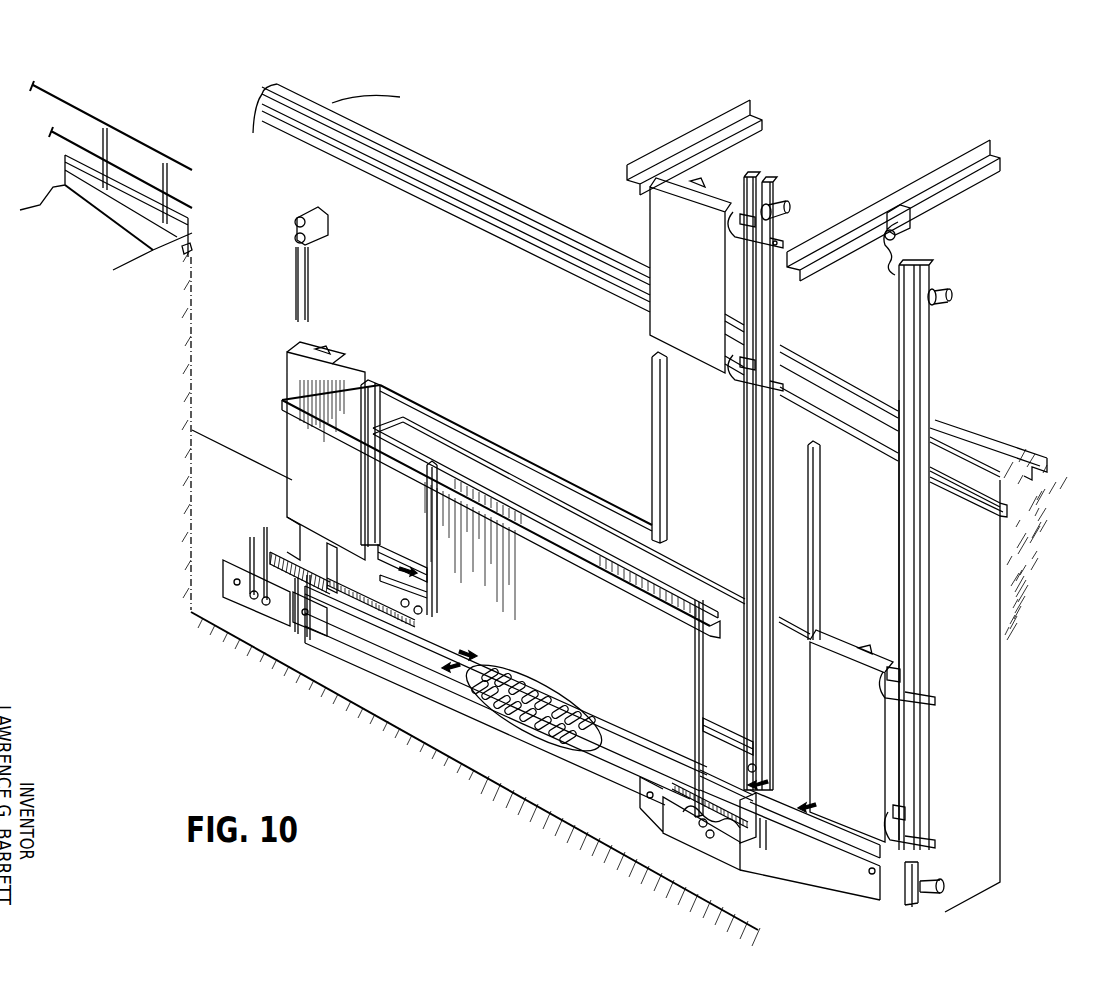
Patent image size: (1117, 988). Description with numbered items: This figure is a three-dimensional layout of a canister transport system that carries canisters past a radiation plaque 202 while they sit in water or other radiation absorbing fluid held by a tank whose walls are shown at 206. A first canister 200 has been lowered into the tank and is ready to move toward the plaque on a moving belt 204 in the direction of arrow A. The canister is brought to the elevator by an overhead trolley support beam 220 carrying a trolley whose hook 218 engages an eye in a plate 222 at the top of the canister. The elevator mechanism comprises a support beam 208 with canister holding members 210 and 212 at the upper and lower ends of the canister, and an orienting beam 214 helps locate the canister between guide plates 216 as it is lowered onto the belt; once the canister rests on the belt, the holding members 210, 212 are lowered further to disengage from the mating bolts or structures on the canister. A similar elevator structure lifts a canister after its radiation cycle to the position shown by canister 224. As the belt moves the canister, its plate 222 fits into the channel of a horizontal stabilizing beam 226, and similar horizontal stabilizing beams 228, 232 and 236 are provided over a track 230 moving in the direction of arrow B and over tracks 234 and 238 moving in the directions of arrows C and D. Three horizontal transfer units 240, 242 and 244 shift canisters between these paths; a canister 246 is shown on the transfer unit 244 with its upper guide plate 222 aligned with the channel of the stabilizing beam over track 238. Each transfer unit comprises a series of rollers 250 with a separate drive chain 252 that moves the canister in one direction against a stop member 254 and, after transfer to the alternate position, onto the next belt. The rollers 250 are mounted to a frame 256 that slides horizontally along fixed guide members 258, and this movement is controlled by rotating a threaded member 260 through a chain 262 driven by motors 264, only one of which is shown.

The first canister 200 is at (823, 707).
The radiation plaque 202 is at (600, 647).
The moving belt 204 is at (793, 800).
The tank walls 206 is at (190, 291).
The support beam 208 is at (918, 555).
The canister holding member 210 is at (784, 240).
The canister holding member 212 is at (773, 383).
The orienting beam 214 is at (667, 437).
The guide plates 216 is at (836, 834).
The hook 218 is at (898, 262).
The overhead trolley support beam 220 is at (730, 118).
The plate 222 is at (340, 366).
The canister 224 is at (663, 218).
The horizontal stabilizing beam 226 is at (473, 453).
The horizontal stabilizing beam 228 is at (490, 498).
The track 230 is at (463, 641).
The horizontal stabilizing beam 232 is at (382, 462).
The track 234 is at (420, 648).
The horizontal stabilizing beam 236 is at (397, 560).
The track 238 is at (440, 411).
The horizontal transfer unit 240 is at (380, 645).
The horizontal transfer unit 242 is at (682, 863).
The horizontal transfer unit 244 is at (284, 506).
The canister 246 is at (293, 438).
The rollers 250 is at (421, 588).
The drive chain 252 is at (367, 603).
The stop member 254 is at (327, 543).
The frame 256 is at (287, 530).
The fixed guide members 258 is at (272, 558).
The threaded member 260 is at (415, 609).
The chain 262 is at (250, 543).
The motor 264 is at (328, 237).